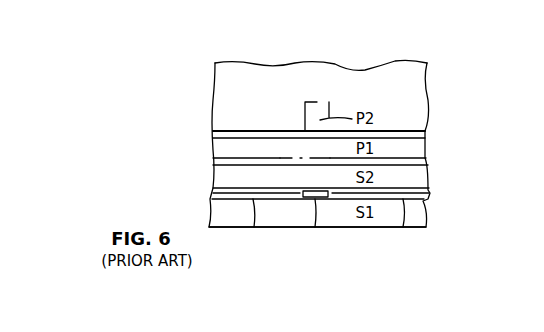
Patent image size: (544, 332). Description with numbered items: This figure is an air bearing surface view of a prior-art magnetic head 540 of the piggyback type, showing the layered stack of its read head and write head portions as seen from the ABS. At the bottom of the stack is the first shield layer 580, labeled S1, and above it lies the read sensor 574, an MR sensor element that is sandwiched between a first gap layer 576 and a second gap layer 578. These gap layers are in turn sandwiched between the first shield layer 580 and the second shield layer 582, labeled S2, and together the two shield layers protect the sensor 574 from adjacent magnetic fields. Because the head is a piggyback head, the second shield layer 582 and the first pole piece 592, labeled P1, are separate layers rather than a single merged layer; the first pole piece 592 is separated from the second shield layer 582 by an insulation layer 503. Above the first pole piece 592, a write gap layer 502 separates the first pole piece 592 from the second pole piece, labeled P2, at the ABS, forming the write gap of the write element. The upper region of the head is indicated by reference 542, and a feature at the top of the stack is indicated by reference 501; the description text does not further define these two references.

The contact plug 501 is at (318, 106).
The write gap layer 502 is at (262, 131).
The insulation layer 503 is at (422, 163).
The magnetic head 540 is at (438, 73).
The upper insulating layer 542 is at (220, 83).
The sensor 574 is at (315, 227).
The first gap layer 576 is at (254, 227).
The second gap layer 578 is at (403, 227).
The first shield layer 580 is at (430, 215).
The second shield layer 582 is at (213, 186).
The first pole piece 592 is at (218, 144).